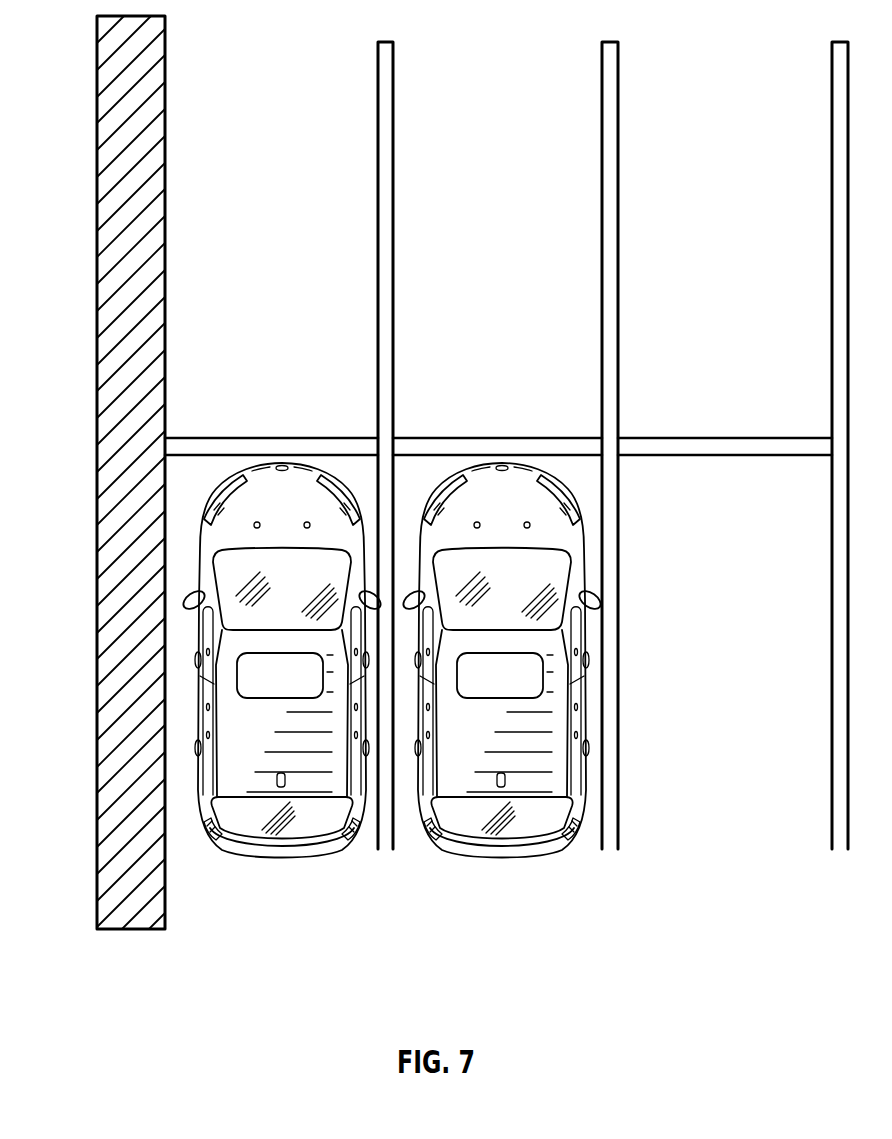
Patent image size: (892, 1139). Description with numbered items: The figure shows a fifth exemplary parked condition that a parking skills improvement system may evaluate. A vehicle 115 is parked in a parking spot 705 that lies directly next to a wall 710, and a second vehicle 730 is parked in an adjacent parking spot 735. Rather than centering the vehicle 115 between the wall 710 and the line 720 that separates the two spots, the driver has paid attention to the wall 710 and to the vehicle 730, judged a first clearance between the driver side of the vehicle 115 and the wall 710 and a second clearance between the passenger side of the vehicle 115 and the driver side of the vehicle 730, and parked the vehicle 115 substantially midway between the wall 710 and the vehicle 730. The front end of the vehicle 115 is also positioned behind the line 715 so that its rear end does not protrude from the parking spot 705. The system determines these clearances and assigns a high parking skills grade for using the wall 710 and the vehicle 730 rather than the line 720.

The vehicle 115 is at (270, 856).
The parking spot 705 is at (263, 744).
The wall 710 is at (117, 605).
The line 715 is at (253, 448).
The line 720 is at (388, 498).
The vehicle 730 is at (508, 857).
The parking spot 735 is at (498, 744).